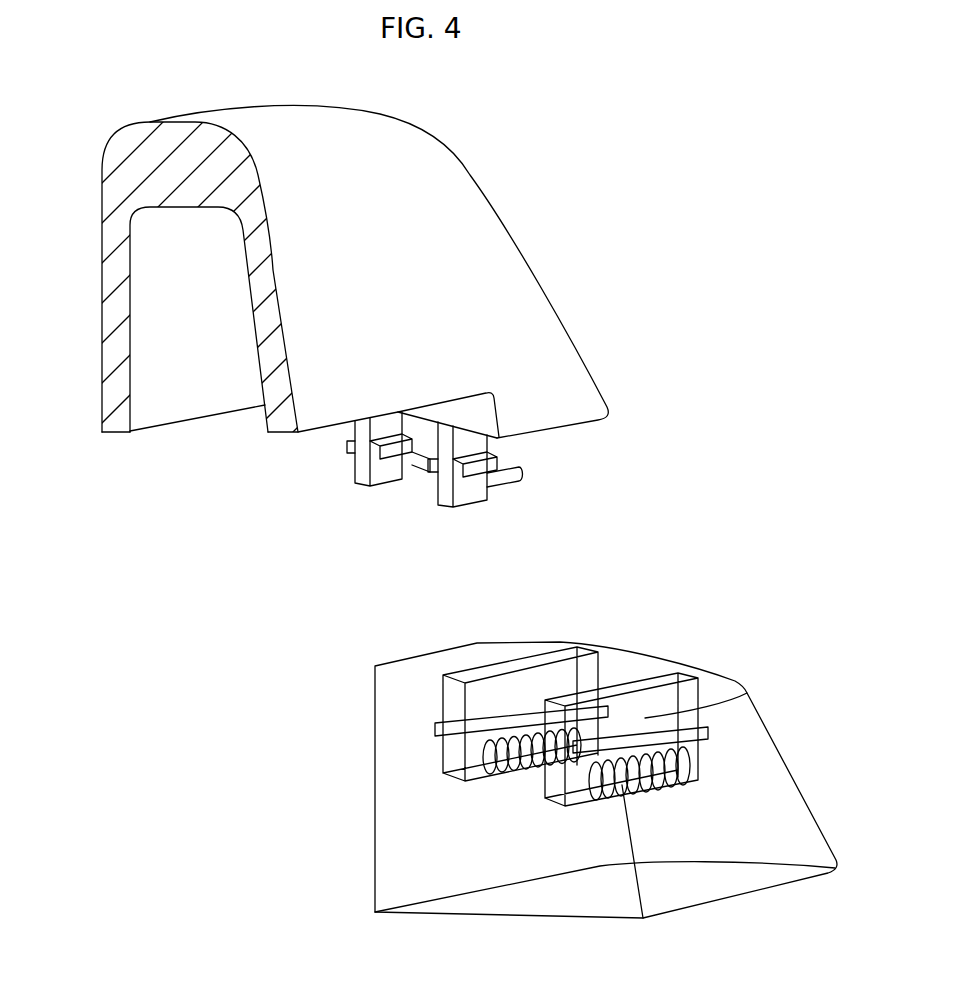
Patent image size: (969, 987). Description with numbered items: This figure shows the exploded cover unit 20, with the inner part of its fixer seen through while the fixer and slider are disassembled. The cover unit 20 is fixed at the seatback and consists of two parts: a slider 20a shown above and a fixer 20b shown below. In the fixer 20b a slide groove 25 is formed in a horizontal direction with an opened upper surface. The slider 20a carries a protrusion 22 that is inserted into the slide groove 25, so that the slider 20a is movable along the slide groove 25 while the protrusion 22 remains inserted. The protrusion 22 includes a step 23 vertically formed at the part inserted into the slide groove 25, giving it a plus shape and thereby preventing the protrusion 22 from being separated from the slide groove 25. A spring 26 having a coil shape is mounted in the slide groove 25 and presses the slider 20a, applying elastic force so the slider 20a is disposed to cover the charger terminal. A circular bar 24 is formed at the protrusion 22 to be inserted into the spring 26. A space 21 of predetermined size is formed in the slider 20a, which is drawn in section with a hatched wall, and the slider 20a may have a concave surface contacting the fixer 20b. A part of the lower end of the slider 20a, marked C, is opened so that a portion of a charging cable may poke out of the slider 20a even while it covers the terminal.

The cover unit 20 is at (702, 252).
The slider 20a is at (433, 230).
The fixer 20b is at (778, 785).
The space 21 is at (195, 321).
The protrusion 22 is at (362, 473).
The step 23 is at (343, 447).
The circular bar 24 is at (500, 488).
The slide groove 25 is at (455, 716).
The spring 26 is at (670, 777).